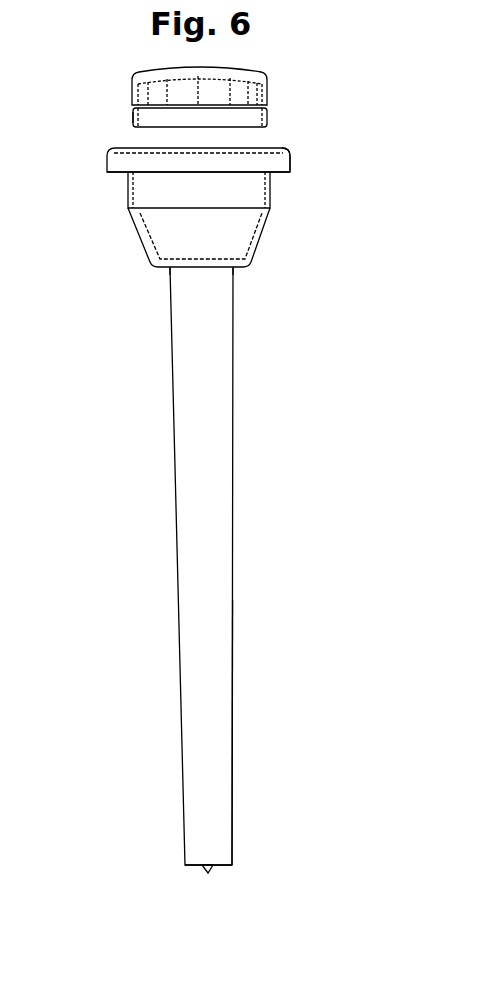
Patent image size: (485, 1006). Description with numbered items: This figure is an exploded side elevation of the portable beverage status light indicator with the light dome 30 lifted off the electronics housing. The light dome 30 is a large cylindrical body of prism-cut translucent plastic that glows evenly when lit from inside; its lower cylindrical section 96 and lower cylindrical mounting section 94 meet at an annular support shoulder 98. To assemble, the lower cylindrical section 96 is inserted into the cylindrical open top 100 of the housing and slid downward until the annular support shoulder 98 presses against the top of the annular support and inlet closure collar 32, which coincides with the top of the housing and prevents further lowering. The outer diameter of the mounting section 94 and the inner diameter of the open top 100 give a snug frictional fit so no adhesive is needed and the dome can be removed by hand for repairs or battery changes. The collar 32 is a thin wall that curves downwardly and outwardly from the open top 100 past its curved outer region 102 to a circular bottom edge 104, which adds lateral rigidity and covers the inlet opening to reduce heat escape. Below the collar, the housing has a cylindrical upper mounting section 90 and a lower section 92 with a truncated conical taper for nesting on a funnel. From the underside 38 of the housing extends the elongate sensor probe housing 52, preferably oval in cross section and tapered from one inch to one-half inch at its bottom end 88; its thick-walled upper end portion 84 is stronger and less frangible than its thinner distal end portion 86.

The light dome 30 is at (243, 80).
The annular support and inlet closure collar 32 is at (110, 168).
The underside of the electronics housing 38 is at (165, 270).
The elongate sensor probe housing 52 is at (223, 537).
The upper end portion 84 is at (250, 316).
The distal end portion 86 is at (232, 740).
The bottom end 88 is at (196, 868).
The upper mounting section 90 is at (130, 192).
The lower section 92 is at (140, 240).
The lower cylindrical mounting section 94 is at (268, 108).
The lower cylindrical section 96 is at (270, 82).
The annular support shoulder 98 is at (132, 116).
The cylindrical open top 100 is at (262, 150).
The flange edge 102 is at (320, 167).
The circular bottom edge 104 is at (278, 176).